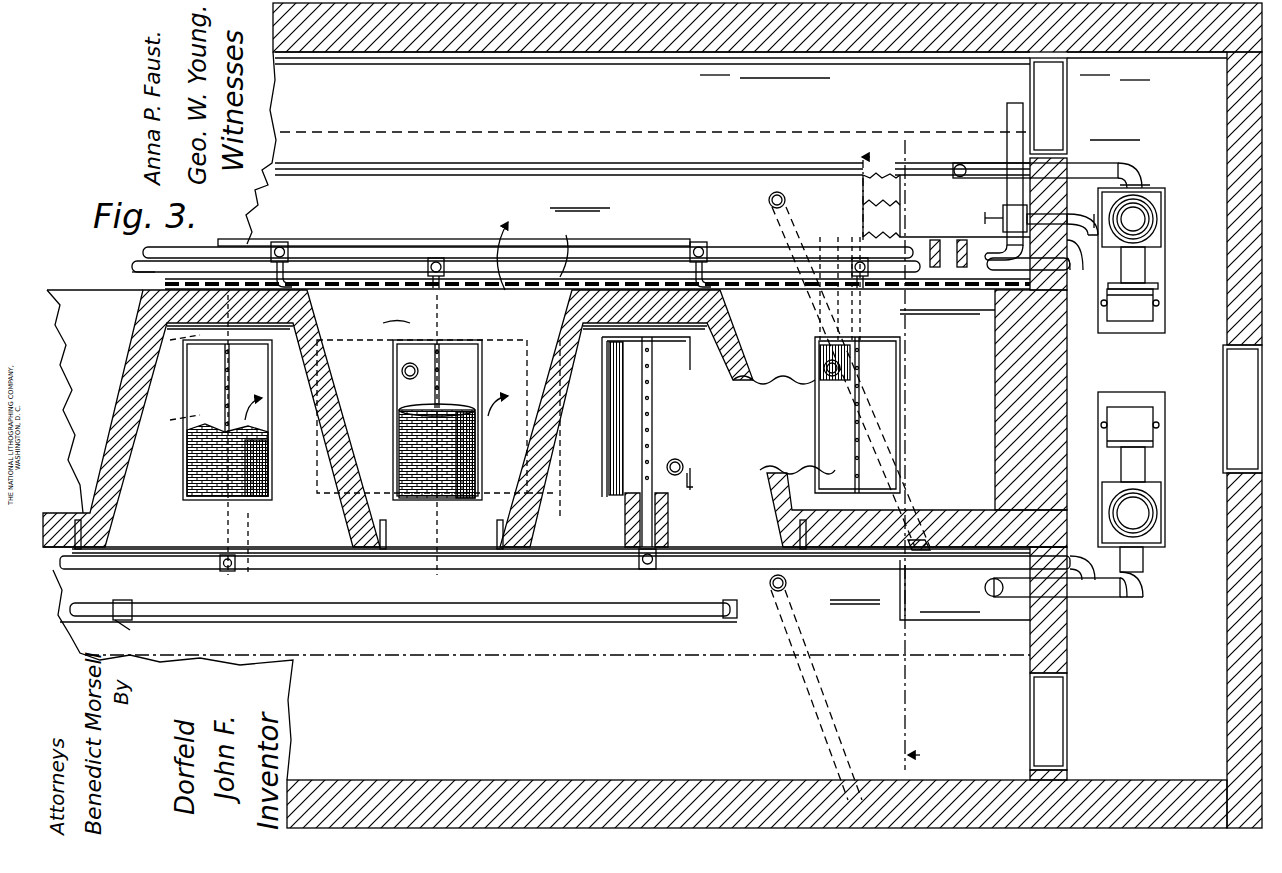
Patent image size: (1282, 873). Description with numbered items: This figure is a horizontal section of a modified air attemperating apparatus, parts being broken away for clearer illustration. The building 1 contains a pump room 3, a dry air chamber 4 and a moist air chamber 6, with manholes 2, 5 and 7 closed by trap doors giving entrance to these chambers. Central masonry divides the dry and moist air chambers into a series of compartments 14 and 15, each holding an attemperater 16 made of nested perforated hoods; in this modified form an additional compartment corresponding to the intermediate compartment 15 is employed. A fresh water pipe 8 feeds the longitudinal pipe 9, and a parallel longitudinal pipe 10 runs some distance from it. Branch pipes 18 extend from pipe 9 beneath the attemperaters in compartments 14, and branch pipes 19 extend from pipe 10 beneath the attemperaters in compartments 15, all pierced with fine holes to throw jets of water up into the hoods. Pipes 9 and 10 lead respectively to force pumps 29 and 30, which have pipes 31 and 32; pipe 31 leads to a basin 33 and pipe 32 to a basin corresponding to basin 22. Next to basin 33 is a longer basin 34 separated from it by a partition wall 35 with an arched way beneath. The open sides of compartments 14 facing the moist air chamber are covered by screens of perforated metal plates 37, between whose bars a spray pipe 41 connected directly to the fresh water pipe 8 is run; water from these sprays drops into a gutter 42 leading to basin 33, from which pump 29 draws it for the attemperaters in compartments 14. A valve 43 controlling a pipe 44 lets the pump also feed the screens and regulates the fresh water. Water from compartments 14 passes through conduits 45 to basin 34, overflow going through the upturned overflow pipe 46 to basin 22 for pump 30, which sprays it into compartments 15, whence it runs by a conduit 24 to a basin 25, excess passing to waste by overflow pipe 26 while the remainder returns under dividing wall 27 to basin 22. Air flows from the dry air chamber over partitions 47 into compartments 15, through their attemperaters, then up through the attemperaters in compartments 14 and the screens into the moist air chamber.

The building 1 is at (1228, 640).
The manhole 2 is at (1242, 409).
The pump room 3 is at (1147, 349).
The dry air chamber 4 is at (557, 459).
The manhole 5 is at (1048, 721).
The moist air chamber 6 is at (652, 113).
The manhole 7 is at (1048, 106).
The fresh water pipe 8 is at (308, 250).
The longitudinal pipe 9 is at (600, 262).
The longitudinal pipe 10 is at (480, 560).
The compartment 14 is at (656, 406).
The compartment 15 is at (162, 543).
The attemperater 16 is at (272, 440).
The branch pipe 18 is at (440, 327).
The branch pipe 19 is at (235, 527).
The basin 22 is at (965, 590).
The conduit 24 is at (328, 580).
The basin 25 is at (328, 570).
The overflow pipe 26 is at (815, 688).
The dividing wall 27 is at (854, 590).
The force pump 29 is at (1140, 218).
The force pump 30 is at (1131, 469).
The pipe 31 is at (1090, 170).
The pipe 32 is at (1100, 600).
The basin 33 is at (946, 205).
The basin 34 is at (541, 196).
The partition wall 35 is at (862, 185).
The perforated metal plate 37 is at (455, 268).
The spray pipe 41 is at (270, 283).
The gutter 42 is at (215, 276).
The valve 43 is at (994, 218).
The pipe 44 is at (1068, 212).
The conduit 45 is at (830, 322).
The overflow pipe 46 is at (770, 205).
The partition 47 is at (160, 560).